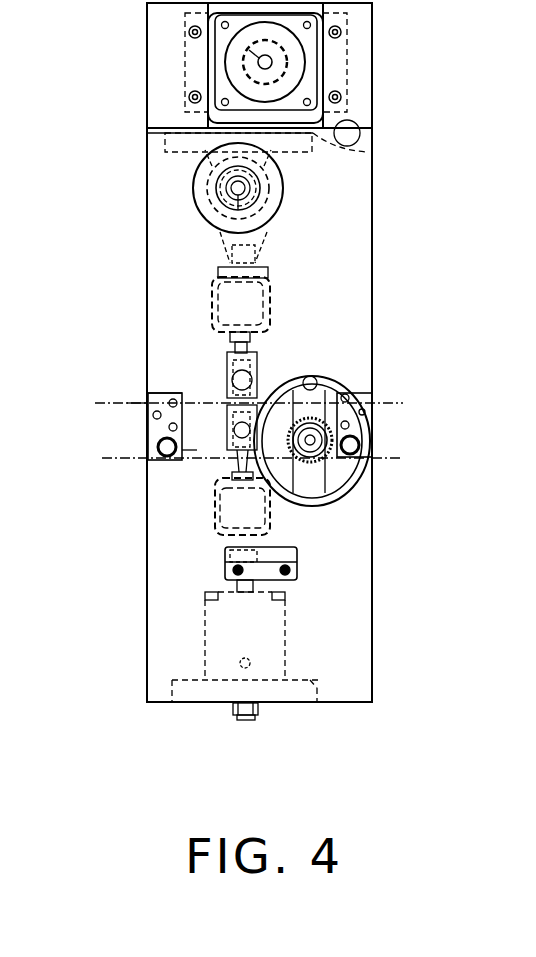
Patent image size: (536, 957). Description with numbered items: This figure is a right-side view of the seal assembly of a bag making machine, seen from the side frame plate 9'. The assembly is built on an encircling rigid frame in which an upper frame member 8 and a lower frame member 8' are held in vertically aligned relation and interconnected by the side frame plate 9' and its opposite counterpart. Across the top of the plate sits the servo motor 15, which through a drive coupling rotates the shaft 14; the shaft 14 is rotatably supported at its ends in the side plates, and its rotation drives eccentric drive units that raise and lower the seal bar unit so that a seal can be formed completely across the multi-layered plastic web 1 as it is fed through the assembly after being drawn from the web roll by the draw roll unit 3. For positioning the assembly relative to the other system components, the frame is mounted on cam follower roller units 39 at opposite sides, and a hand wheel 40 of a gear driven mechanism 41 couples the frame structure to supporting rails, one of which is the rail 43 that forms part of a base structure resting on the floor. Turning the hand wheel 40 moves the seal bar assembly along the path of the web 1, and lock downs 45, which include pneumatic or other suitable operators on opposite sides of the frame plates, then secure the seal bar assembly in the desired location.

The multi-layered plastic web 1 is at (127, 403).
The draw roll unit 3 is at (162, 393).
The upper frame member 8 is at (296, 127).
The lower frame member 8' is at (308, 647).
The side frame plate 9' is at (265, 361).
The rotating shaft 14 is at (250, 192).
The servo motor 15 is at (308, 53).
The cam follower roller units 39 is at (197, 450).
The hand wheel 40 is at (350, 378).
The gear driven mechanism 41 is at (340, 450).
The supporting rail 43 is at (132, 458).
The lock downs 45 is at (300, 562).